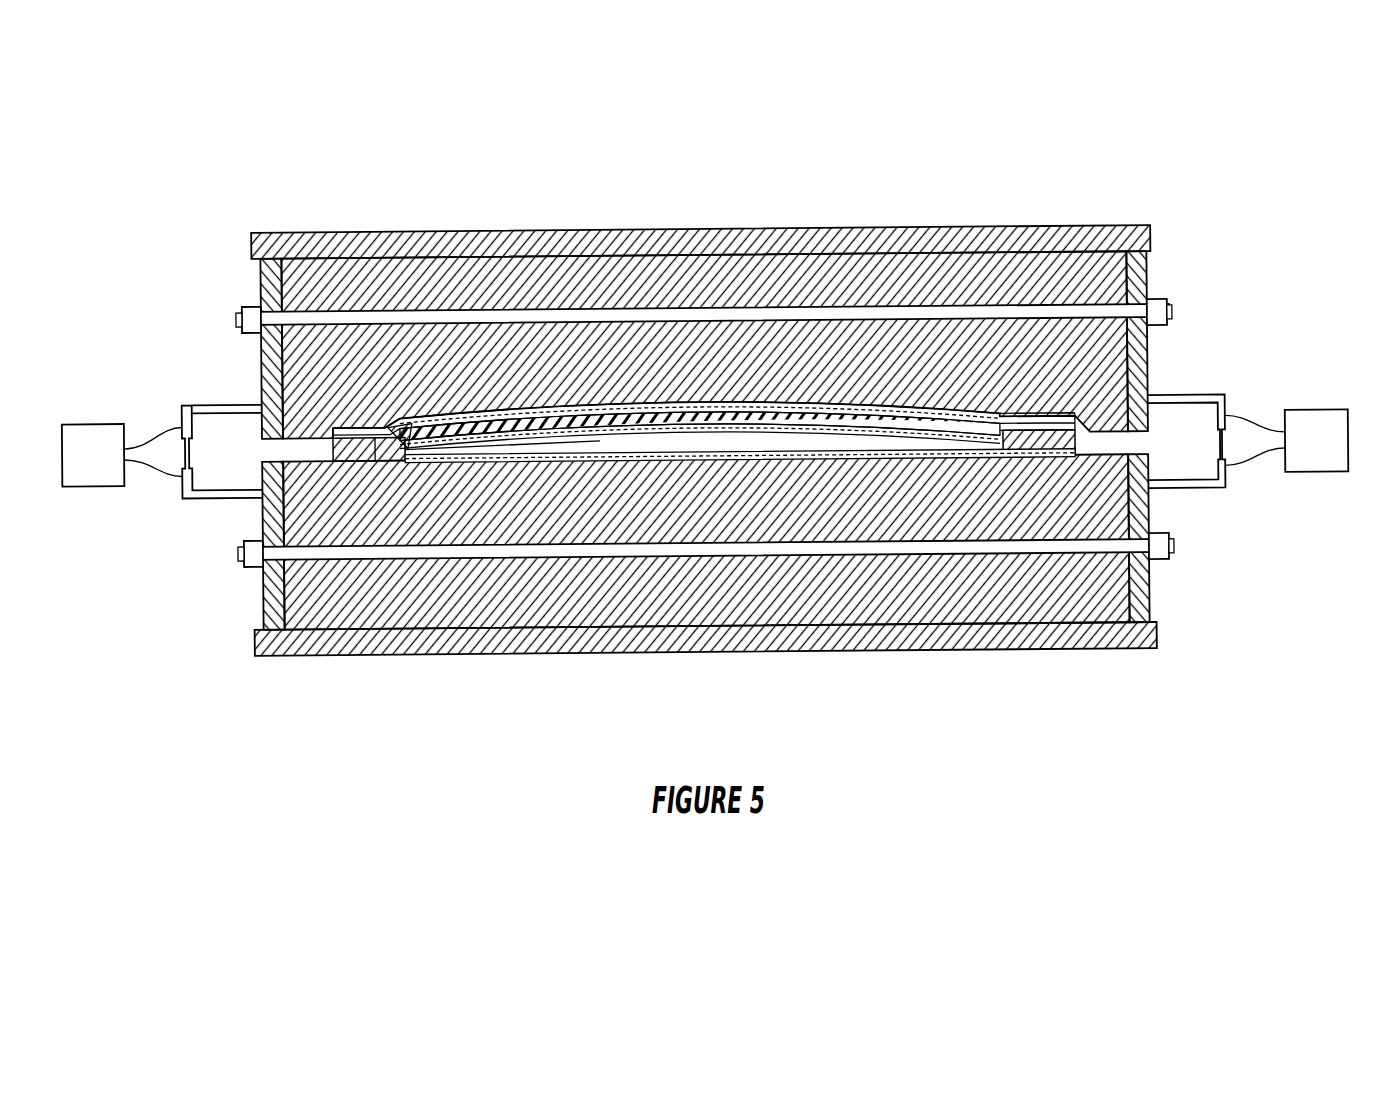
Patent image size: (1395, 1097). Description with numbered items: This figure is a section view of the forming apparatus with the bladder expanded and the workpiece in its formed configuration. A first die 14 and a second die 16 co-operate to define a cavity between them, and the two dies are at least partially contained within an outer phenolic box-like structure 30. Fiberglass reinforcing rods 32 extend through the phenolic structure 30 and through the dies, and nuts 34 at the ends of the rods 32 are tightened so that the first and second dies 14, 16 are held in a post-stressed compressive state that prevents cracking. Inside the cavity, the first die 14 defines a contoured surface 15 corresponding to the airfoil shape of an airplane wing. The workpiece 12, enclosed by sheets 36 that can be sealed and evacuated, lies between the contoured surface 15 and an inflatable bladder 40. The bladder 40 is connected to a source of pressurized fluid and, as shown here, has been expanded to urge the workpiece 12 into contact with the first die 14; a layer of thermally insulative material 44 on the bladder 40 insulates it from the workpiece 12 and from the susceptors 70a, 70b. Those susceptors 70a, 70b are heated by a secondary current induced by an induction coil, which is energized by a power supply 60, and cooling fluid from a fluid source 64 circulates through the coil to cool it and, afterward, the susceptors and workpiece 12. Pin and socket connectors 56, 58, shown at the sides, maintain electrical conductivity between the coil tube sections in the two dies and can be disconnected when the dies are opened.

The workpiece 12 is at (757, 417).
The first die 14 is at (1025, 335).
The contoured surface 15 is at (848, 425).
The second die 16 is at (1068, 601).
The box-like structure 30 is at (972, 229).
The reinforcing rods 32 is at (313, 299).
The nuts 34 is at (245, 312).
The sheets 36 is at (600, 410).
The inflatable bladder 40 is at (348, 455).
The thermally insulative material 44 is at (375, 440).
The pin and socket connector 56 is at (190, 495).
The pin and socket connector 58 is at (208, 401).
The power supply 60 is at (1318, 477).
The fluid source 64 is at (82, 419).
The susceptor 70a is at (672, 400).
The susceptor 70b is at (507, 460).